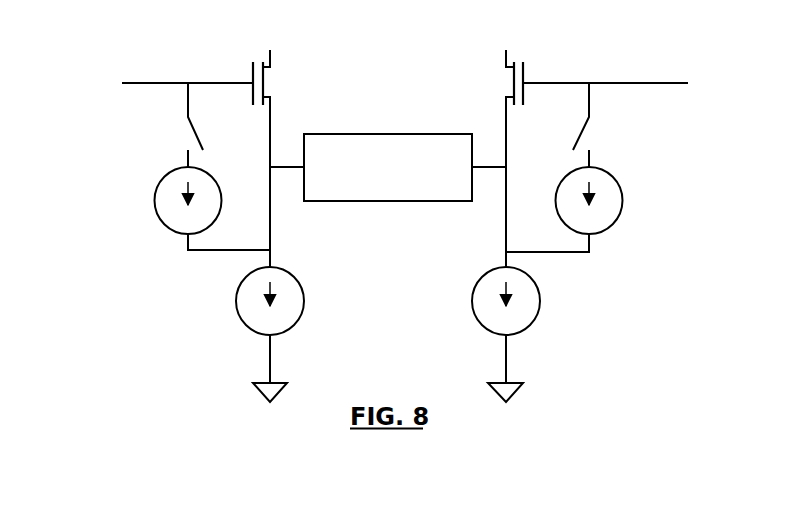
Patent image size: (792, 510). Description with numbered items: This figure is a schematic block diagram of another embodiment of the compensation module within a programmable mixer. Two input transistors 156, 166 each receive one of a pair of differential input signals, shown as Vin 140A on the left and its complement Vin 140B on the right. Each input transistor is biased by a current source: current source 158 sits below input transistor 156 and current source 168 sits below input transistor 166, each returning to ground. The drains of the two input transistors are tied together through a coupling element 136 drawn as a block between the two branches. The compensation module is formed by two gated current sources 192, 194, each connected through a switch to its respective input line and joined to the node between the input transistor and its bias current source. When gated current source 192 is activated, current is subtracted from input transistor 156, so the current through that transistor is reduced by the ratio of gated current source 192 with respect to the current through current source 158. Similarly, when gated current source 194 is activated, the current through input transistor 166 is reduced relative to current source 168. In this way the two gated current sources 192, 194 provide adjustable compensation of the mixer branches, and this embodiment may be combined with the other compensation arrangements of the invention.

The input voltage Vin 140A is at (150, 85).
The complementary input voltage Vin-bar 140B is at (726, 52).
The input transistor 156 is at (286, 158).
The input transistor 166 is at (490, 158).
The coupling element 136 is at (388, 167).
The gated current source 192 is at (187, 166).
The gated current source 194 is at (587, 167).
The current source 158 is at (277, 322).
The current source 168 is at (481, 334).